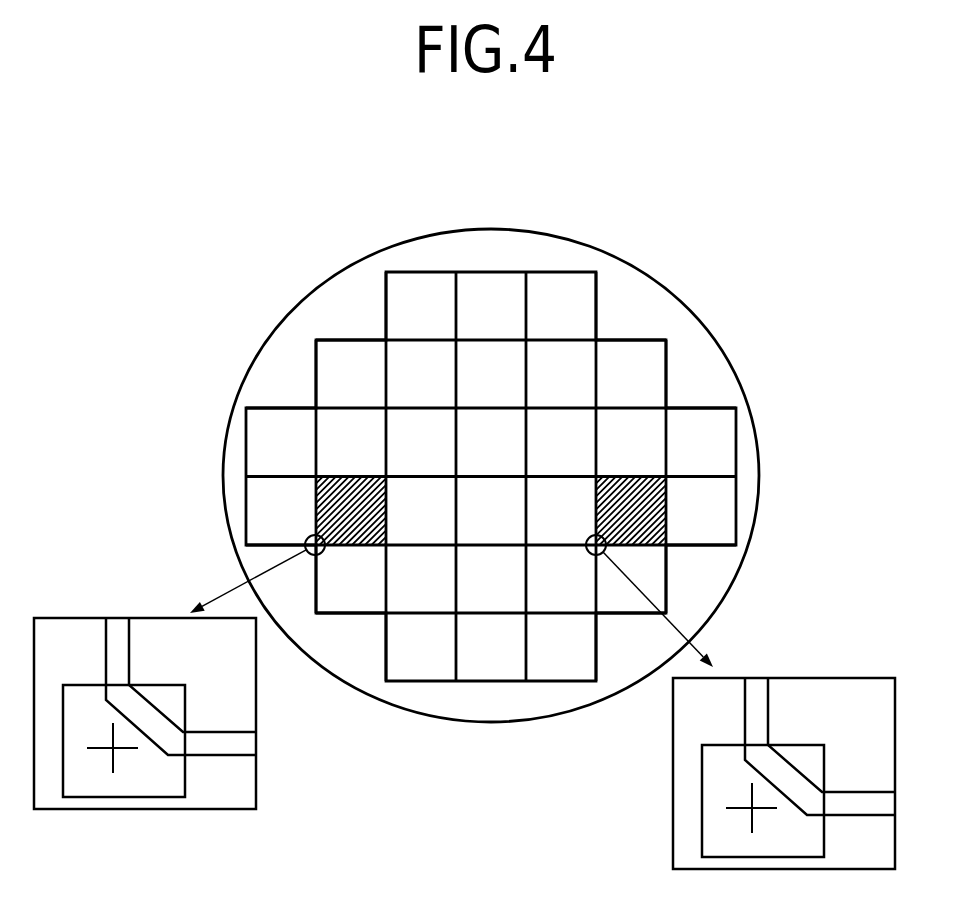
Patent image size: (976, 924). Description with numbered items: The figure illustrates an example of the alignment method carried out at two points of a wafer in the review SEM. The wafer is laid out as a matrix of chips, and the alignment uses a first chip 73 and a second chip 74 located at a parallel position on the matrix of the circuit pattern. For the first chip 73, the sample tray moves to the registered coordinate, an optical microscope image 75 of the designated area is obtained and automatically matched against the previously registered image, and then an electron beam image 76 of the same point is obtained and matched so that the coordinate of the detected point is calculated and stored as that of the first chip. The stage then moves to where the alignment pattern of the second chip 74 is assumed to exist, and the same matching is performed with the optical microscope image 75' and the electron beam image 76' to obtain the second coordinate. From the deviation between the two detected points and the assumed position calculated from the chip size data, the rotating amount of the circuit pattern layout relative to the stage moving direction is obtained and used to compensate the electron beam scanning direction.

The first chip 73 is at (491, 476).
The second chip 74 is at (650, 545).
The optical microscope image 75 is at (174, 668).
The electron beam image 76 is at (121, 723).
The optical microscope image 75' is at (813, 730).
The electron beam image 76' is at (757, 783).